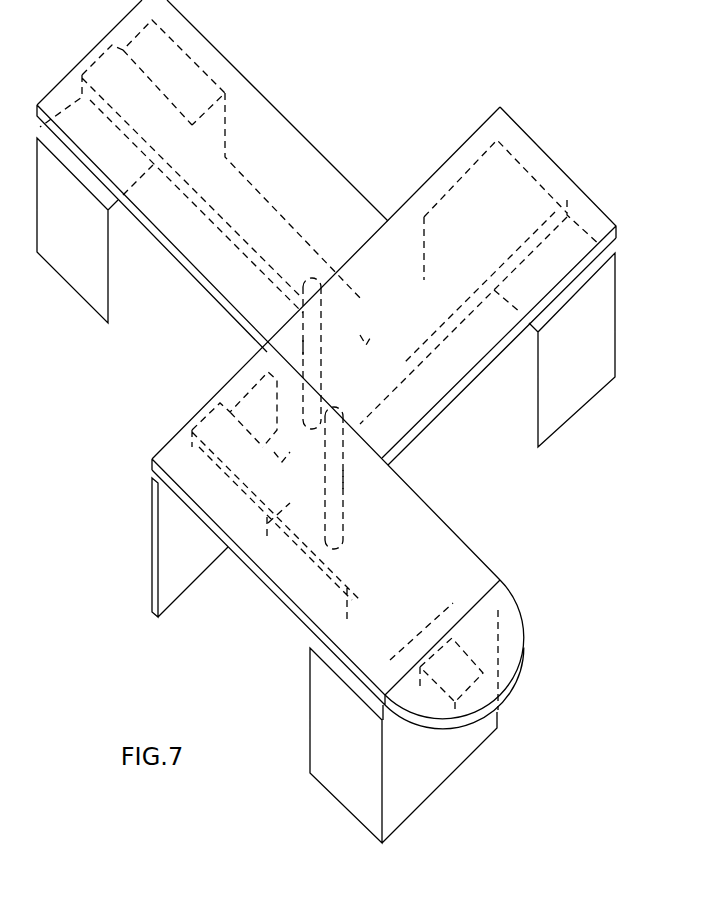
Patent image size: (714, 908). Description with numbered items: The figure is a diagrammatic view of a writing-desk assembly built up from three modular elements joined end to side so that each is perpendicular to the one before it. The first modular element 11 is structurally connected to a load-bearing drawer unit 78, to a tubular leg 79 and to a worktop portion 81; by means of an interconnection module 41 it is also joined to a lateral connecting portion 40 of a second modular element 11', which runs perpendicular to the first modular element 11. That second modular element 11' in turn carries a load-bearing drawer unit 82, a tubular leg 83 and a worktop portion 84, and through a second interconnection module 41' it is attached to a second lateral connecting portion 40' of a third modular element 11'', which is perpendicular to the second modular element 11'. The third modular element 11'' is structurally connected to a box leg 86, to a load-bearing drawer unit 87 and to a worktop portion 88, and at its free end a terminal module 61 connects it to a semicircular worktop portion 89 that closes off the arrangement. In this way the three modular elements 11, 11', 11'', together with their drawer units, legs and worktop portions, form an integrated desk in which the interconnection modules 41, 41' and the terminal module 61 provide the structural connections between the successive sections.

The modular element 11 is at (201, 166).
The second modular element 11' is at (480, 282).
The third modular element 11'' is at (276, 523).
The lateral connecting portion 40 is at (394, 339).
The second lateral connecting portion 40' is at (273, 476).
The interconnection module 41 is at (333, 320).
The second interconnection module 41' is at (305, 493).
The terminal module 61 is at (493, 648).
The load-bearing drawer unit 78 is at (75, 283).
The tubular leg 79 is at (303, 347).
The worktop portion 81 is at (283, 133).
The load-bearing drawer unit 82 is at (575, 392).
The tubular leg 83 is at (348, 483).
The worktop portion 84 is at (430, 402).
The box leg 86 is at (190, 570).
The load-bearing drawer unit 87 is at (328, 768).
The worktop portion 88 is at (440, 520).
The semicircular worktop portion 89 is at (447, 712).